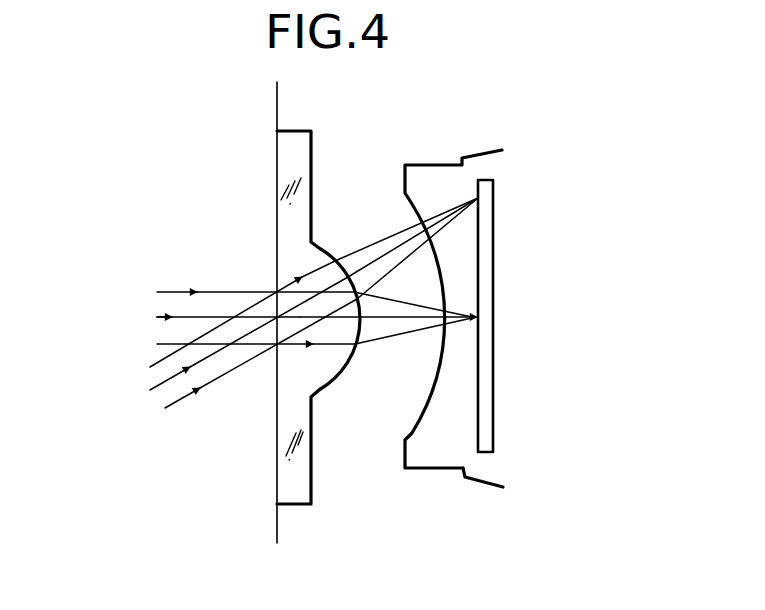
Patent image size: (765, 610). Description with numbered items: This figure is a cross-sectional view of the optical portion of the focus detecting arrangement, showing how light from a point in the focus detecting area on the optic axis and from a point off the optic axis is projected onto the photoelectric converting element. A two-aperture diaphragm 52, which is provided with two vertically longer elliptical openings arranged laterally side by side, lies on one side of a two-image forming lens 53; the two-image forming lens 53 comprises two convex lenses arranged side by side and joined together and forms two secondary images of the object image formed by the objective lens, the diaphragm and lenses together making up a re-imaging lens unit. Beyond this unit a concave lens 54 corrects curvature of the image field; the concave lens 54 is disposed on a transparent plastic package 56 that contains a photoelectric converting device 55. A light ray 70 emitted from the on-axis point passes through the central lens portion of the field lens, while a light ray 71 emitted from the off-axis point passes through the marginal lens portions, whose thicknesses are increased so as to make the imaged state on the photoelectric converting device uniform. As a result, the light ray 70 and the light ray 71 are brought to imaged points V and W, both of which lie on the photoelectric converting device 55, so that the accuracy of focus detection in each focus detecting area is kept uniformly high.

The two-aperture diaphragm 52 is at (278, 530).
The two-image forming lens 53 is at (305, 508).
The concave lens 54 is at (422, 449).
The photoelectric converting device 55 is at (495, 426).
The transparent plastic package 56 is at (487, 470).
The light ray 70 is at (154, 342).
The light ray 71 is at (160, 408).
The imaged point W is at (484, 197).
The imaged point V is at (488, 316).